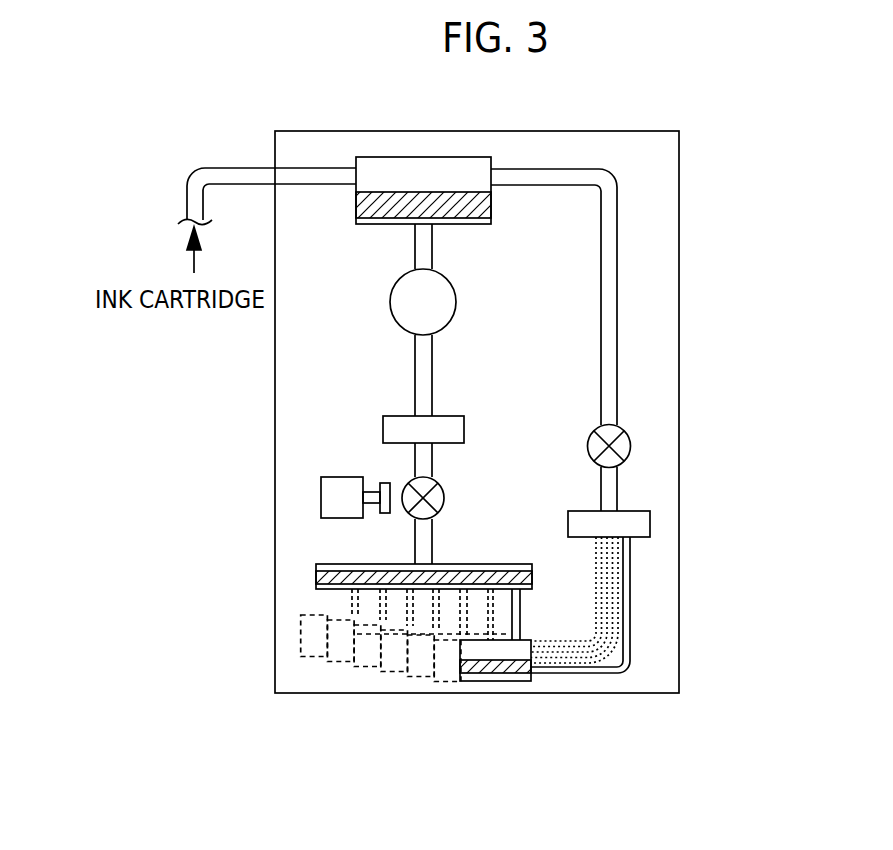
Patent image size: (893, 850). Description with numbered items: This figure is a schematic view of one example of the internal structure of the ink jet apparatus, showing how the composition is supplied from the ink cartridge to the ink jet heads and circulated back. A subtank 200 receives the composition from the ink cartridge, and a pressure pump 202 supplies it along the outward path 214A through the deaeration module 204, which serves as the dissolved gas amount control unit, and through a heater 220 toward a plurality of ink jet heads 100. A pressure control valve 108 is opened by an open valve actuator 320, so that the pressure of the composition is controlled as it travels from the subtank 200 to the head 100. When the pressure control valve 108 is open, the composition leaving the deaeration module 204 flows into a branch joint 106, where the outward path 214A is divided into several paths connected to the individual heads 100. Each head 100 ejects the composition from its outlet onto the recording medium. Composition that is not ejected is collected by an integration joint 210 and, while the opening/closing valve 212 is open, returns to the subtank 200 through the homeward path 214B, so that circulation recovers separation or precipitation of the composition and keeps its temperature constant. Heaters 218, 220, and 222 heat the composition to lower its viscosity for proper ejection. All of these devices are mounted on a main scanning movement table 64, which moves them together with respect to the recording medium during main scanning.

The main scanning movement table 64 is at (679, 151).
The subtank 200 is at (423, 152).
The heater 218 is at (438, 190).
The outward path 214A is at (432, 243).
The homeward path 214B is at (617, 226).
The pressure pump 202 is at (395, 320).
The deaeration module 204 is at (383, 424).
The pressure control valve 108 is at (413, 476).
The open valve actuator 320 is at (321, 496).
The branch joint 106 is at (365, 611).
The heater 220 is at (333, 592).
The ink jet head 100 is at (478, 694).
The heater 222 is at (497, 673).
The opening/closing valve 212 is at (617, 423).
The integration joint 210 is at (637, 511).